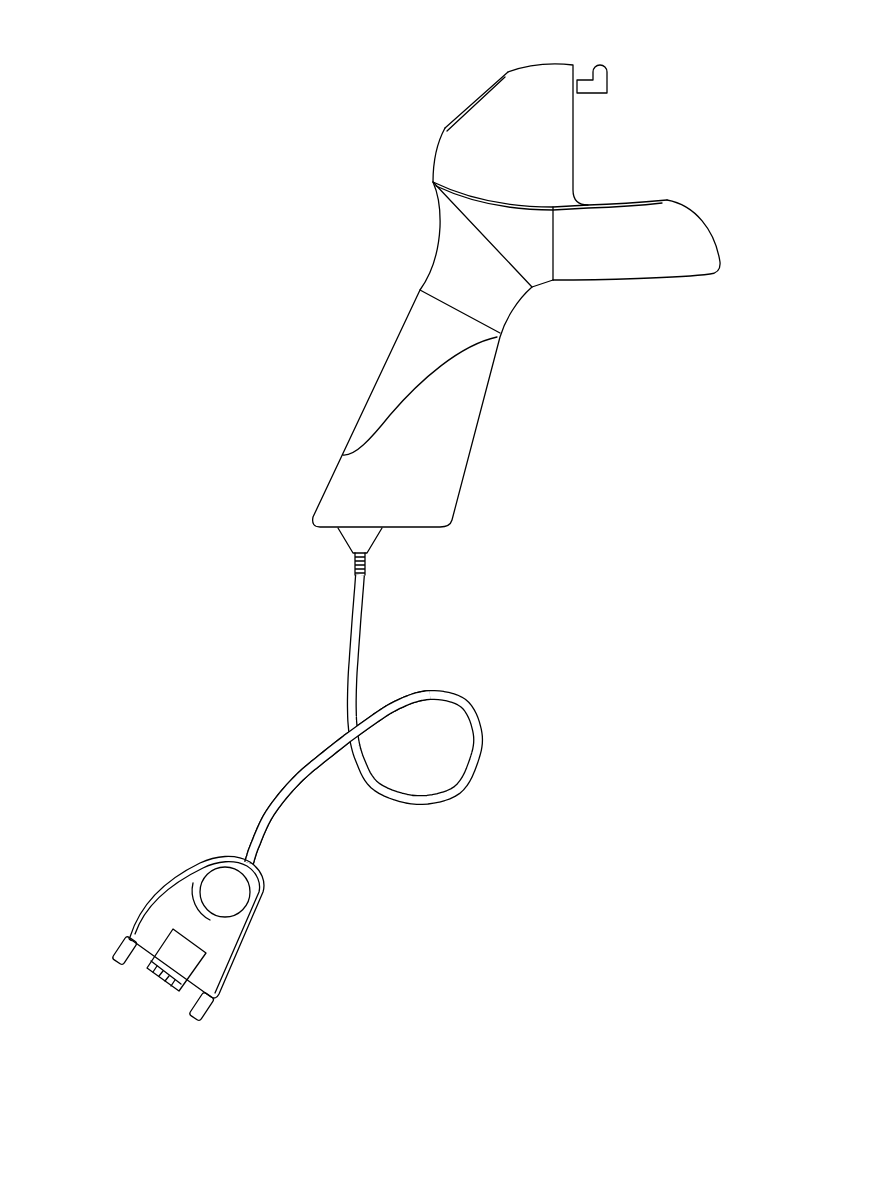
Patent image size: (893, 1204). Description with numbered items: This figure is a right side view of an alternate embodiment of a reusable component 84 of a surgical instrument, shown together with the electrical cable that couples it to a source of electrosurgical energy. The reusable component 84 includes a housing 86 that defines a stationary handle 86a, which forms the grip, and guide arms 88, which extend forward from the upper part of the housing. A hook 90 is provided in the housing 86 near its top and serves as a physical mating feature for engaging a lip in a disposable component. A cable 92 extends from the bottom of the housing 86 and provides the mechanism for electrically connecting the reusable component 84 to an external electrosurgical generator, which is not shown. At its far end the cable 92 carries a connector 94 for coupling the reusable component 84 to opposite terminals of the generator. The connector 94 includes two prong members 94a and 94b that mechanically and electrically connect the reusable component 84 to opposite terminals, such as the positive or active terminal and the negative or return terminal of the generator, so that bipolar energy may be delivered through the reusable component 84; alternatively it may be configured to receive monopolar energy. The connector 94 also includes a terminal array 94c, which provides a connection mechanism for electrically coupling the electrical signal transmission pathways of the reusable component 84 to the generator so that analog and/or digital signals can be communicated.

The reusable component 84 is at (457, 54).
The housing 86 is at (545, 72).
The stationary handle 86a is at (470, 405).
The guide arms 88 is at (687, 223).
The hook 90 is at (611, 79).
The cable 92 is at (365, 593).
The connector 94 is at (253, 938).
The prong member 94a is at (117, 962).
The prong member 94b is at (187, 1018).
The terminal array 94c is at (157, 977).